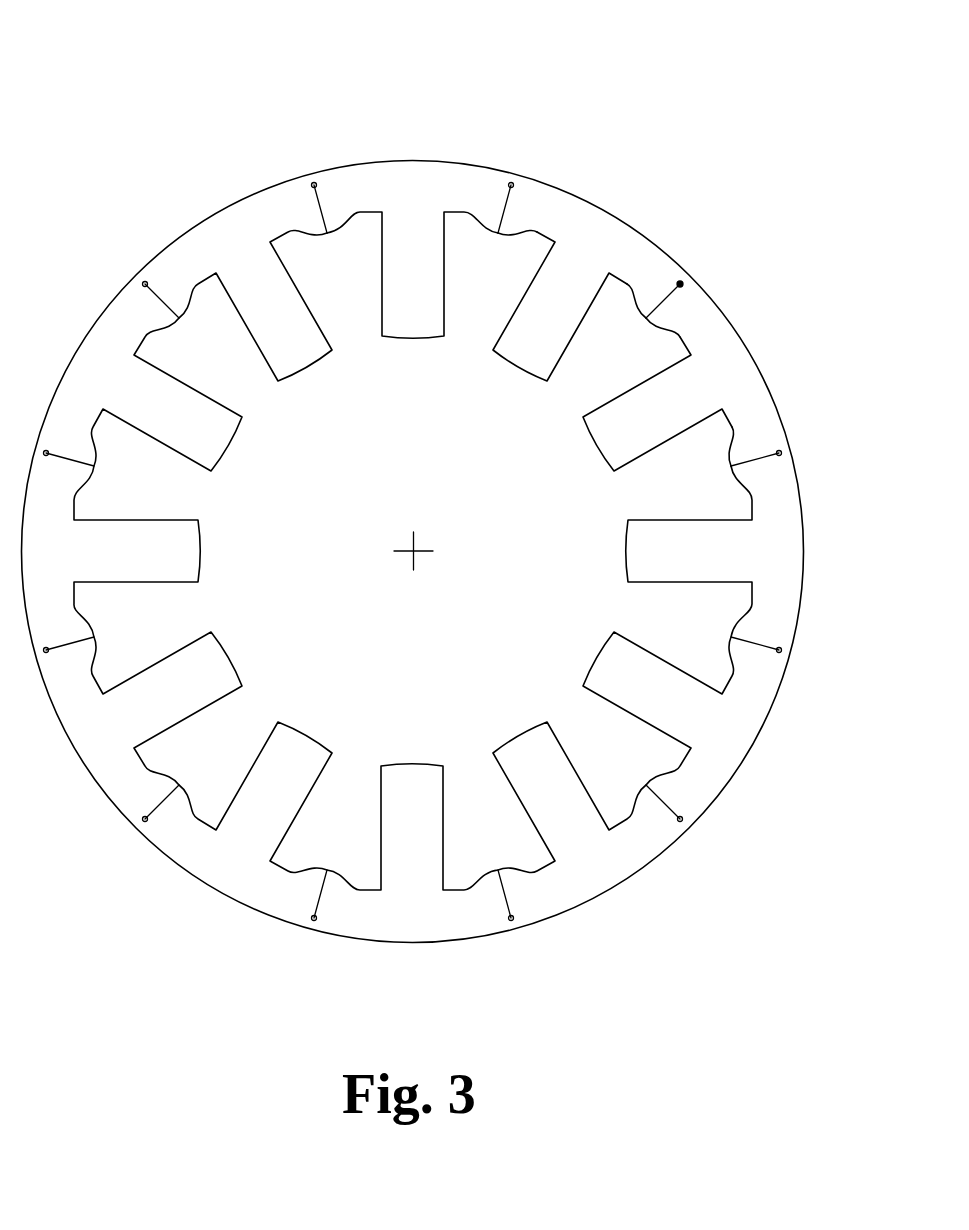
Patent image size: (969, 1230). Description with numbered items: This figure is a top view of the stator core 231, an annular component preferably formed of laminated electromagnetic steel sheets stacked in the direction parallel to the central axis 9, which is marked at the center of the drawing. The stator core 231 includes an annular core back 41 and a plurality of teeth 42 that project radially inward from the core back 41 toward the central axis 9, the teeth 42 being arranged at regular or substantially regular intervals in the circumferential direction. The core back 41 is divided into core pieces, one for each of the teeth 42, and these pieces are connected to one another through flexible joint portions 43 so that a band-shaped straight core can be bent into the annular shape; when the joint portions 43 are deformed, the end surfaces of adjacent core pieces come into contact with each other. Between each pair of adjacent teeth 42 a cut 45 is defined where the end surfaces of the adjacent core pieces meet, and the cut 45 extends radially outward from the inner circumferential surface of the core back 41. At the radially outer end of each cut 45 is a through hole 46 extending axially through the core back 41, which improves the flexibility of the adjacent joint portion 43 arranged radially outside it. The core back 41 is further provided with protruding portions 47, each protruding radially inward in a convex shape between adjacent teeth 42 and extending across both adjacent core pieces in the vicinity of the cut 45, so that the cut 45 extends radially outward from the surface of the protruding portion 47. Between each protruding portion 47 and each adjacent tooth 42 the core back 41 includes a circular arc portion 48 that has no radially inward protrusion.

The stator core 231 is at (208, 125).
The core back 41 is at (347, 193).
The teeth 42 is at (622, 435).
The joint portion 43 is at (513, 183).
The cut 45 is at (657, 302).
The through hole 46 is at (682, 282).
The protruding portion 47 is at (662, 320).
The circular arc portion 48 is at (555, 217).
The central axis 9 is at (407, 543).